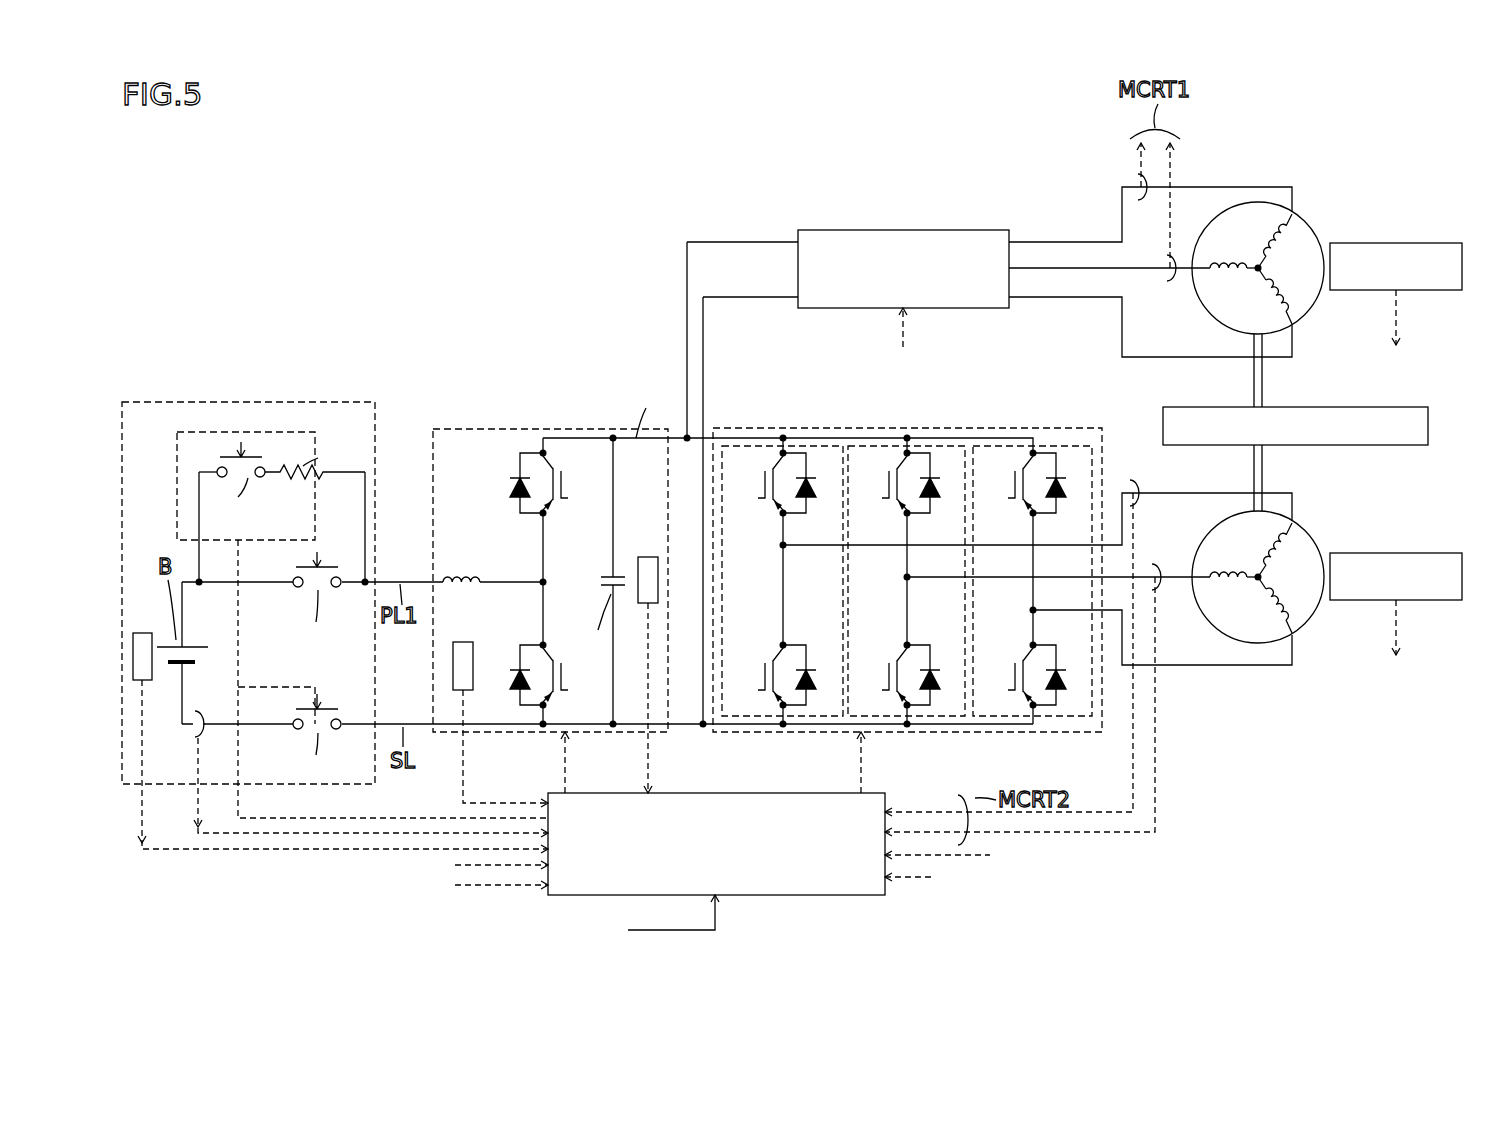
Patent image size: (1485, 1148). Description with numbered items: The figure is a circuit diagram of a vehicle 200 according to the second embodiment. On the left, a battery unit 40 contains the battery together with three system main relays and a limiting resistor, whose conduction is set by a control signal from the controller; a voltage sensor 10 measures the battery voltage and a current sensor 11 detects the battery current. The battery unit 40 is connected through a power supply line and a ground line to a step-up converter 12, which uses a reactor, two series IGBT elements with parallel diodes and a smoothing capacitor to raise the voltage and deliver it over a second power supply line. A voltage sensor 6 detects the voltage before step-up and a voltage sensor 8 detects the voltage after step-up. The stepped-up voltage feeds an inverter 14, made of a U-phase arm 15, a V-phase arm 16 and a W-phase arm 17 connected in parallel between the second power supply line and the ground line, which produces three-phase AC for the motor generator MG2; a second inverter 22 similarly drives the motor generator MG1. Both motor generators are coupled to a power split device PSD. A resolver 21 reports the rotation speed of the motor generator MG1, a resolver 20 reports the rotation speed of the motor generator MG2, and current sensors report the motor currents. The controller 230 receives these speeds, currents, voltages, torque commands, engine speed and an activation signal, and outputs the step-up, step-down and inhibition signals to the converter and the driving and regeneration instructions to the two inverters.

The vehicle 200 is at (190, 348).
The battery unit 40 is at (287, 402).
The voltage sensor 10 is at (140, 633).
The current sensor 11 is at (200, 712).
The step-up converter 12 is at (433, 463).
The voltage sensor 6 is at (463, 642).
The voltage sensor 8 is at (648, 557).
The inverter 14 is at (902, 586).
The U-phase arm 15 is at (818, 446).
The V-phase arm 16 is at (940, 446).
The W-phase arm 17 is at (1070, 446).
The inverter 22 is at (972, 230).
The resolver 21 is at (1425, 243).
The resolver 20 is at (1425, 553).
The controller 230 is at (826, 895).
The motor generator MG1 is at (1300, 218).
The motor generator MG2 is at (1308, 622).
The power split device PSD is at (1195, 407).